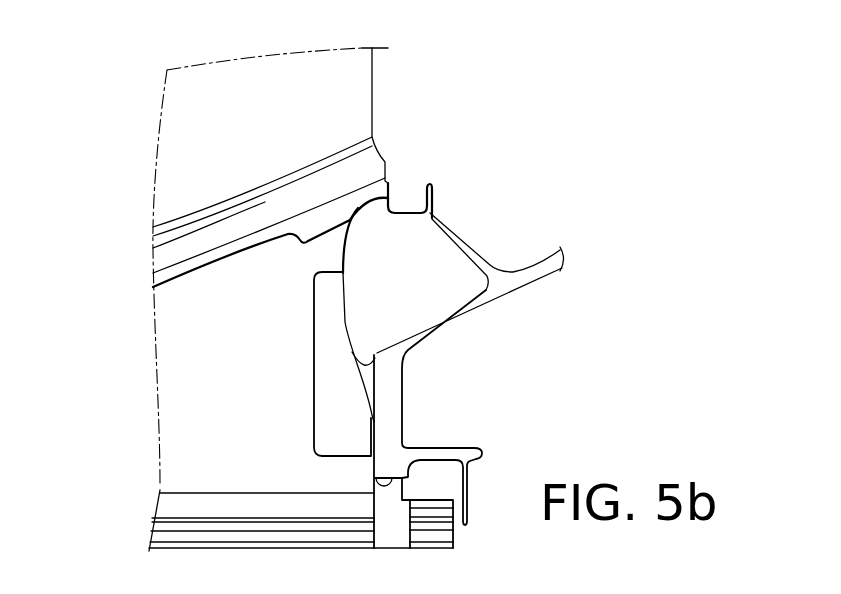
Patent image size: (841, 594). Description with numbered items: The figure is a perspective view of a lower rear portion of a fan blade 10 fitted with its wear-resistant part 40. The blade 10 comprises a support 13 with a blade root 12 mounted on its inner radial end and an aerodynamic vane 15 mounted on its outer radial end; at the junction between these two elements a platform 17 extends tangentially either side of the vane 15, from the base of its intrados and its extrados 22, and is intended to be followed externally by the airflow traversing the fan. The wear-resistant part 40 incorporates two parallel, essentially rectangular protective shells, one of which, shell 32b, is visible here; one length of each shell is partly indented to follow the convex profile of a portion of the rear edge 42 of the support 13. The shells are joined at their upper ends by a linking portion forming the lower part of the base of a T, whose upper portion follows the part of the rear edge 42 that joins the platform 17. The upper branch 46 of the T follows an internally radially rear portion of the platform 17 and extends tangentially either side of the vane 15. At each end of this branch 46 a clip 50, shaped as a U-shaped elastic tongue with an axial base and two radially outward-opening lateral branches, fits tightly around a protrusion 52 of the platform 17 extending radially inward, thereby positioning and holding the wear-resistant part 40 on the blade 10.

The blade 10 is at (503, 96).
The blade root 12 is at (157, 507).
The support 13 is at (181, 432).
The vane 15 is at (358, 82).
The platform 17 is at (271, 221).
The extrados 22 is at (320, 123).
The protective shell 32b is at (328, 360).
The wear-resistant part 40 is at (368, 329).
The rear edge 42 is at (410, 352).
The upper branch 46 is at (356, 210).
The clip 50 is at (300, 243).
The protrusion 52 is at (325, 225).